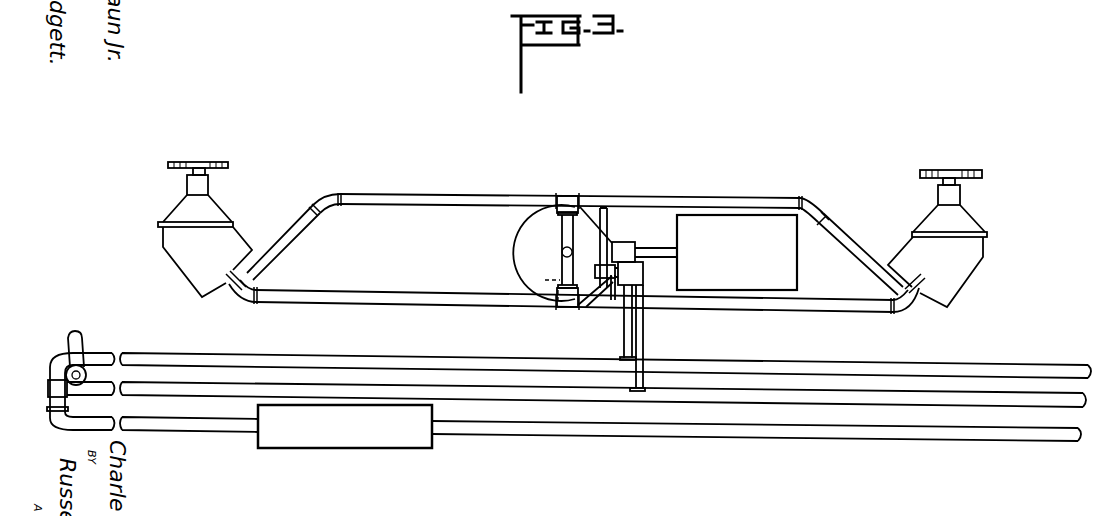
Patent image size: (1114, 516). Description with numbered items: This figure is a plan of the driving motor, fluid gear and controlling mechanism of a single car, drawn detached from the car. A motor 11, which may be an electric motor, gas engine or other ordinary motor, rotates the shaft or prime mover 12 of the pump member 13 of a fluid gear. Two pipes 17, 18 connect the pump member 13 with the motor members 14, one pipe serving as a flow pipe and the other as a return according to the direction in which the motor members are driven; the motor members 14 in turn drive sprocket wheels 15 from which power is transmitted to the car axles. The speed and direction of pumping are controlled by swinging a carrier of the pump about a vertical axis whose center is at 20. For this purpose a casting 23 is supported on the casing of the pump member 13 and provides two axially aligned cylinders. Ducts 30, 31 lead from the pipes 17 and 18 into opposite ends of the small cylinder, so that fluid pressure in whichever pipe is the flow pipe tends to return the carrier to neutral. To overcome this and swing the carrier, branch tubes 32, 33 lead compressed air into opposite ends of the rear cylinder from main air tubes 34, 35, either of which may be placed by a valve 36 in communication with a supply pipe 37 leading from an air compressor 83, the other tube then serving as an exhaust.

The motor 11 is at (737, 252).
The shaft or prime mover 12 is at (656, 250).
The pump member 13 is at (544, 253).
The motor members 14 is at (572, 241).
The sprocket wheels 15 is at (222, 162).
The pipe 17 is at (497, 202).
The pipe 18 is at (445, 297).
The center of swinging movement 20 is at (565, 255).
The casting 23 is at (643, 275).
The duct 30 is at (607, 218).
The duct 31 is at (610, 283).
The branch tube 32 is at (625, 341).
The branch tube 33 is at (642, 341).
The main air tube 34 is at (380, 363).
The main air tube 35 is at (470, 395).
The valve 36 is at (82, 352).
The supply pipe 37 is at (193, 426).
The air compressor 83 is at (372, 439).